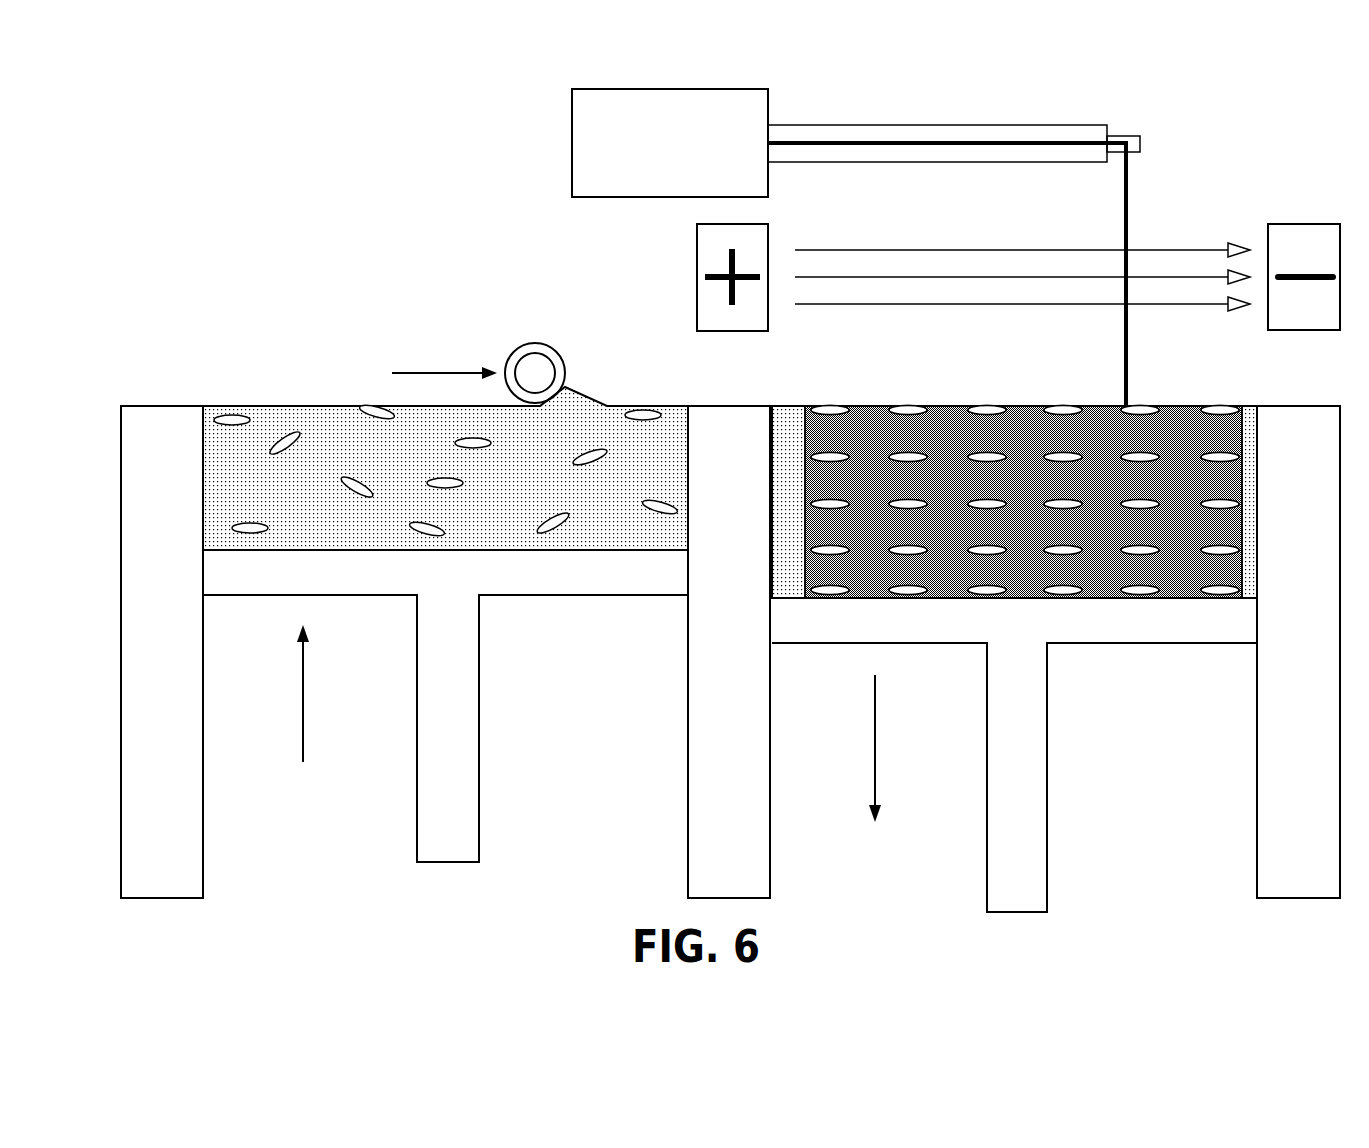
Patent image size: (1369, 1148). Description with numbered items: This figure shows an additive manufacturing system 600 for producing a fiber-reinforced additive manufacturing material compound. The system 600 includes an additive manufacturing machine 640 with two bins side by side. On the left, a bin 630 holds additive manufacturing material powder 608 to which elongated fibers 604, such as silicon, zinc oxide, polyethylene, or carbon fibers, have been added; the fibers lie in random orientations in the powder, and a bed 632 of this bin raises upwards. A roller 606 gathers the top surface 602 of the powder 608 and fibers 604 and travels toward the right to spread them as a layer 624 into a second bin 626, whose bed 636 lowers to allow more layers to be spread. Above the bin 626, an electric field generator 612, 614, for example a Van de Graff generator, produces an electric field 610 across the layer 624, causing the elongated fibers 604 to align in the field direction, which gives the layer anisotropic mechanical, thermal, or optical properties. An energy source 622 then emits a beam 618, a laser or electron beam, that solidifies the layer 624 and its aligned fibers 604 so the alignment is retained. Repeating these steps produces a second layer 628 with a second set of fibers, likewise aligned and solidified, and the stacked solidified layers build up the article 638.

The additive manufacturing system 600 is at (318, 167).
The top surface 602 is at (618, 388).
The elongated fibers 604 is at (275, 445).
The roller 606 is at (535, 343).
The additive manufacturing material powder 608 is at (225, 405).
The electric field 610 is at (965, 250).
The electric field generator 612 is at (695, 260).
The electric field generator 614 is at (1303, 224).
The beam 618 is at (1128, 168).
The energy source 622 is at (670, 89).
The layer 624 is at (1215, 384).
The bin 626 is at (795, 384).
The second layer 628 is at (1240, 455).
The bin 630 is at (120, 460).
The bed 632 is at (575, 596).
The bed 636 is at (1197, 645).
The article 638 is at (1240, 483).
The additive manufacturing machine 640 is at (252, 319).